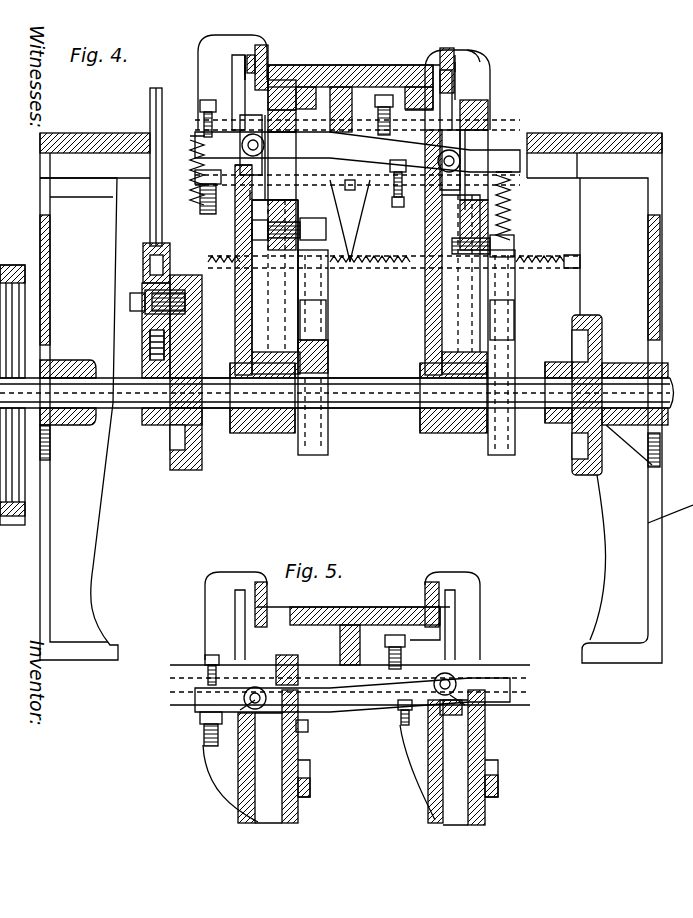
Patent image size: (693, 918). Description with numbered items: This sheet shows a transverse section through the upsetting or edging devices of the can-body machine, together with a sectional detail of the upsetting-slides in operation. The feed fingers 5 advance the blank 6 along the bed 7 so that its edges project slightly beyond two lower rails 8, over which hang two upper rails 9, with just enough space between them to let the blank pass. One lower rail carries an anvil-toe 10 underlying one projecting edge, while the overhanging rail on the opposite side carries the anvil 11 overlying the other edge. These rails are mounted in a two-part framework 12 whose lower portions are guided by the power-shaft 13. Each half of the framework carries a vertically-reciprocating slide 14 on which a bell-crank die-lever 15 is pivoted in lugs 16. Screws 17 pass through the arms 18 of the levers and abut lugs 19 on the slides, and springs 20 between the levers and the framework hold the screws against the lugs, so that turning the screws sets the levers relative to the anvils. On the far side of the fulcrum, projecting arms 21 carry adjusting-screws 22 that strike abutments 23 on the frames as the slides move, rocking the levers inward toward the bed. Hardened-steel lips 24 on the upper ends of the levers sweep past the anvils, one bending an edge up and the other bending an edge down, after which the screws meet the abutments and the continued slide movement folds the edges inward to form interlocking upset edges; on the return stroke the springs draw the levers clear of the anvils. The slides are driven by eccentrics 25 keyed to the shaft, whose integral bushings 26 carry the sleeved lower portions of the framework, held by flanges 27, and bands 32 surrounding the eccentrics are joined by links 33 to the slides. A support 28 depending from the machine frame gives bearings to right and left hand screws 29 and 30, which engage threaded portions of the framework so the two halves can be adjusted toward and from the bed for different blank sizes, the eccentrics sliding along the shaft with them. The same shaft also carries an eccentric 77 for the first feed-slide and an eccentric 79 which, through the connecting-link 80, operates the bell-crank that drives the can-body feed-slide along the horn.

In FIG. 4, the feed-lugs 5 is at (305, 65).
In FIG. 5, the feed-lugs 5 is at (320, 607).
In FIG. 4, the blank 6 is at (410, 65).
In FIG. 5, the blank 6 is at (413, 607).
In FIG. 4, the bed 7 is at (330, 95).
In FIG. 5, the bed 7 is at (340, 640).
In FIG. 4, the rails 8 is at (262, 75).
In FIG. 5, the rails 8 is at (342, 616).
In FIG. 4, the rails 9 is at (262, 62).
In FIG. 4, the anvil-toe 10 is at (232, 58).
In FIG. 4, the anvil 11 is at (470, 50).
In FIG. 4, the framework 12 is at (235, 232).
In FIG. 4, the power-shaft 13 is at (383, 378).
In FIG. 4, the slide 14 is at (280, 300).
In FIG. 5, the slide 14 is at (300, 752).
In FIG. 4, the die-lever 15 is at (245, 90).
In FIG. 4, the lugs 16 is at (272, 175).
In FIG. 4, the adjusting-screws 17 is at (300, 185).
In FIG. 5, the adjusting-screws 17 is at (310, 728).
In FIG. 4, the arms 18 is at (500, 160).
In FIG. 5, the arms 18 is at (315, 705).
In FIG. 4, the lugs 19 is at (345, 92).
In FIG. 5, the lugs 19 is at (318, 672).
In FIG. 4, the springs 20 is at (195, 185).
In FIG. 4, the projecting arms 21 is at (205, 135).
In FIG. 4, the adjusting-screws 22 is at (200, 100).
In FIG. 5, the adjusting-screws 22 is at (205, 658).
In FIG. 4, the abutments 23 is at (215, 150).
In FIG. 5, the abutments 23 is at (200, 730).
In FIG. 4, the lips 24 is at (248, 40).
In FIG. 4, the eccentrics 25 is at (328, 355).
In FIG. 4, the bushings 26 is at (275, 422).
In FIG. 4, the flanges 27 is at (230, 420).
In FIG. 4, the support 28 is at (355, 272).
In FIG. 4, the screw 29 is at (520, 250).
In FIG. 4, the screw 30 is at (215, 268).
In FIG. 4, the bands 32 is at (313, 430).
In FIG. 4, the links 33 is at (320, 232).
In FIG. 4, the eccentric 77 is at (572, 455).
In FIG. 4, the eccentric 79 is at (172, 440).
In FIG. 4, the connecting-link 80 is at (150, 103).